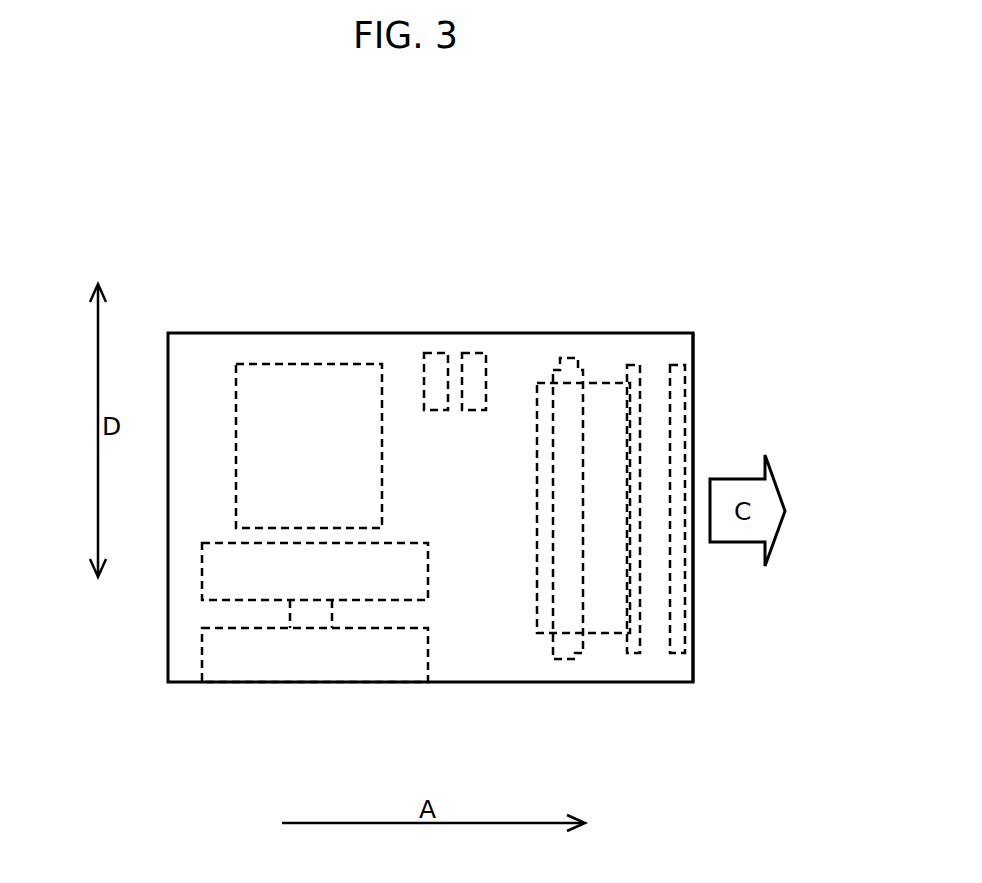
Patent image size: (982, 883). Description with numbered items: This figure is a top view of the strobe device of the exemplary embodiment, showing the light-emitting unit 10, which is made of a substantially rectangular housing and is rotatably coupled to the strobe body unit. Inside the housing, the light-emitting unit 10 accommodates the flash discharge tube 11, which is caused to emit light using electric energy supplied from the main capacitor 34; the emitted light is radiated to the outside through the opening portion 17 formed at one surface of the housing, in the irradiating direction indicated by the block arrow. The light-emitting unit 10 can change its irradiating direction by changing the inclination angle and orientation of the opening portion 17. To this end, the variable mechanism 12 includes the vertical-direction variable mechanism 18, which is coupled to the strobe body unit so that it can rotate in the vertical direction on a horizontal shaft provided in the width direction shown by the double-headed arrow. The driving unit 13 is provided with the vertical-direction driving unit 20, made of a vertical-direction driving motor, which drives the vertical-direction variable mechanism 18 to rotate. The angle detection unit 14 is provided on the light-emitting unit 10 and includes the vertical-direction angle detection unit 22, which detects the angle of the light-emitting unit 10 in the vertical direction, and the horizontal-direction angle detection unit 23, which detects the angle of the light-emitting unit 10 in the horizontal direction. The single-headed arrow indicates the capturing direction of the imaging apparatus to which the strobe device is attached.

The light-emitting unit 10 is at (260, 310).
The flash discharge tube 11 is at (553, 640).
The variable mechanism 12 is at (123, 657).
The driving unit 13 is at (123, 744).
The angle detection unit 14 is at (402, 226).
The opening portion 17 is at (693, 642).
The vertical-direction variable mechanism 18 is at (202, 608).
The vertical-direction driving unit 20 is at (202, 663).
The vertical-direction angle detection unit 22 is at (440, 352).
The horizontal-direction angle detection unit 23 is at (478, 353).
The main capacitor 34 is at (312, 364).